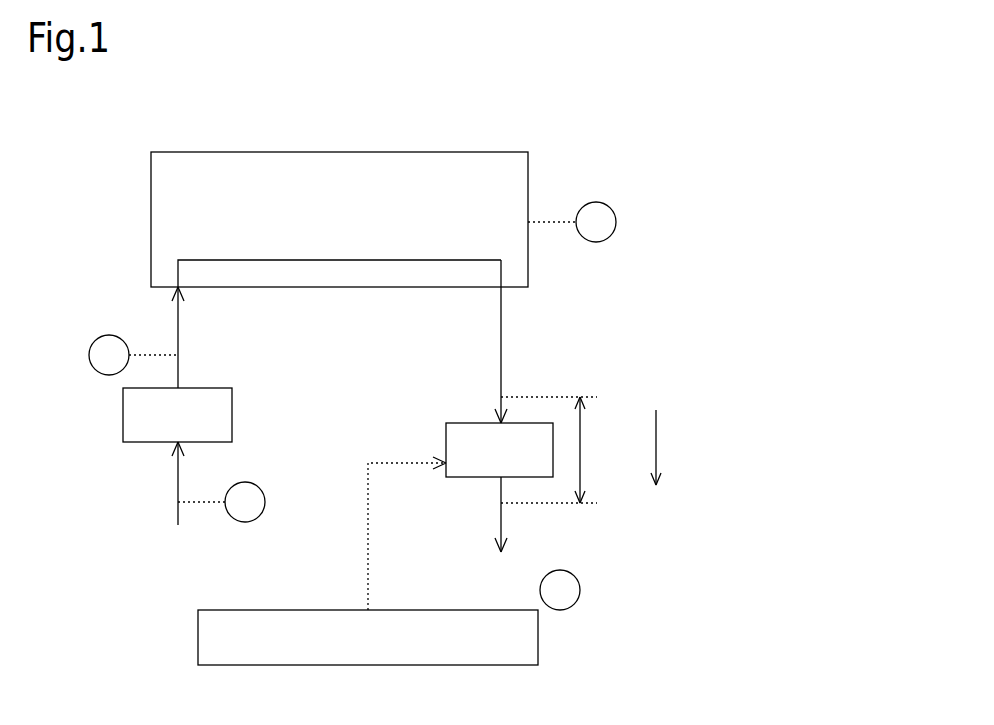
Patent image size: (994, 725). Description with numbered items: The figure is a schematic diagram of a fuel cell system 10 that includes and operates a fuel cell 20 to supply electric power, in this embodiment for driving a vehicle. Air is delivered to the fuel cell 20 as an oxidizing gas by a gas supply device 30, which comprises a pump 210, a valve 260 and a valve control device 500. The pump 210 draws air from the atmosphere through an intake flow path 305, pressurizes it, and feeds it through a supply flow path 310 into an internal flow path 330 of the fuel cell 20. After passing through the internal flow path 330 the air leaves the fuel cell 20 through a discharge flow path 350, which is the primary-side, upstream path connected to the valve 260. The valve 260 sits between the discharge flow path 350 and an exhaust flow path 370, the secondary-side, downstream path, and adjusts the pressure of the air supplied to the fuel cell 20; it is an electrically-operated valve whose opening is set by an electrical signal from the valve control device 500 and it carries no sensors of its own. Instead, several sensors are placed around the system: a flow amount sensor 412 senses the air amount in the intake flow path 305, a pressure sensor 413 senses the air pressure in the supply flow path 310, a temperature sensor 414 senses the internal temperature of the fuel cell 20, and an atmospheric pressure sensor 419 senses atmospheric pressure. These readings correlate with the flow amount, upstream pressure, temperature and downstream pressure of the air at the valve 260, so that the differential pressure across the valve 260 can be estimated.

The fuel cell system 10 is at (665, 141).
The fuel cell 20 is at (340, 152).
The gas supply device 30 is at (601, 311).
The pump 210 is at (205, 388).
The valve 260 is at (458, 423).
The intake flow path 305 is at (172, 490).
The supply flow path 310 is at (172, 334).
The internal flow path 330 is at (341, 262).
The discharge flow path 350 is at (496, 340).
The exhaust flow path 370 is at (496, 528).
The flow amount sensor 412 is at (265, 499).
The pressure sensor 413 is at (89, 355).
The temperature sensor 414 is at (616, 224).
The atmospheric pressure sensor 419 is at (580, 589).
The valve control device 500 is at (420, 610).